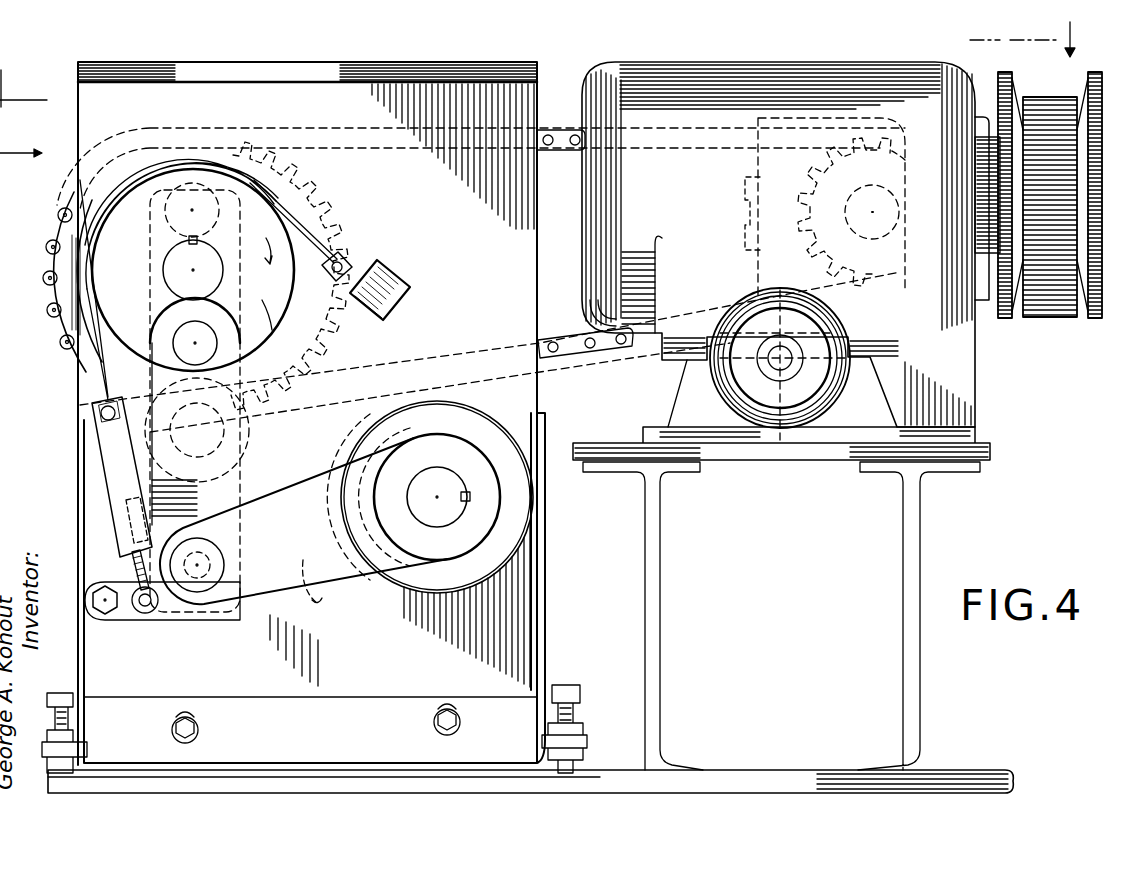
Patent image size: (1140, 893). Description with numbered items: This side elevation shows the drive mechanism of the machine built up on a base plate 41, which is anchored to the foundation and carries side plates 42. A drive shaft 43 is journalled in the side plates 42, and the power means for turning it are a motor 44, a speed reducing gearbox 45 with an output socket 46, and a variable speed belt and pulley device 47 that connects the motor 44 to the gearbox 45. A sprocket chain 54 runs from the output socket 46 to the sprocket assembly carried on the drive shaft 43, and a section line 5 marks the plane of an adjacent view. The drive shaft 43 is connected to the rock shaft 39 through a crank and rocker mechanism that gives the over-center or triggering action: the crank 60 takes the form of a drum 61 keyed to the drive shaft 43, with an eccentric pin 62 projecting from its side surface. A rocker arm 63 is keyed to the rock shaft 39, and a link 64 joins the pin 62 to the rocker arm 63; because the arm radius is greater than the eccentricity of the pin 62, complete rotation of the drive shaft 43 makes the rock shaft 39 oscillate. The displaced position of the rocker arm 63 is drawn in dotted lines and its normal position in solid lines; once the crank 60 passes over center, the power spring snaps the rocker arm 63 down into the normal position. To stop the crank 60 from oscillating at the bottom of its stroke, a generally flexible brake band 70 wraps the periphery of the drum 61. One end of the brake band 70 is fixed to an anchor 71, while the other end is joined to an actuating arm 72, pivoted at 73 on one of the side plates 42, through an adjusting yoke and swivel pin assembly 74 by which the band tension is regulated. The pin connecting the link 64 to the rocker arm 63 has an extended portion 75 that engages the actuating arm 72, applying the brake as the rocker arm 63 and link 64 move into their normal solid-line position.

The section line 5- 5 is at (1032, 39).
The rock shaft 39 is at (440, 480).
The base plate 41 is at (745, 775).
The side plates 42 is at (530, 612).
The drive shaft 43 is at (176, 272).
The motor 44 is at (690, 66).
The speed reducing gearbox 45 is at (790, 125).
The output socket 46 is at (830, 155).
The variable speed belt and pulley device 47 is at (1045, 320).
The sprocket chain 54 is at (550, 150).
The crank 60 is at (148, 210).
The drum 61 is at (290, 335).
The eccentric pin 62 is at (193, 188).
The rocker arm 63 is at (316, 600).
The link 64 is at (245, 470).
The brake band 70 is at (285, 193).
The fixed anchor 71 is at (380, 258).
The actuating arm 72 is at (228, 620).
The pivot 73 is at (108, 612).
The adjusting yoke and swivel pin assembly 74 is at (110, 505).
The extended portion 75 is at (232, 548).